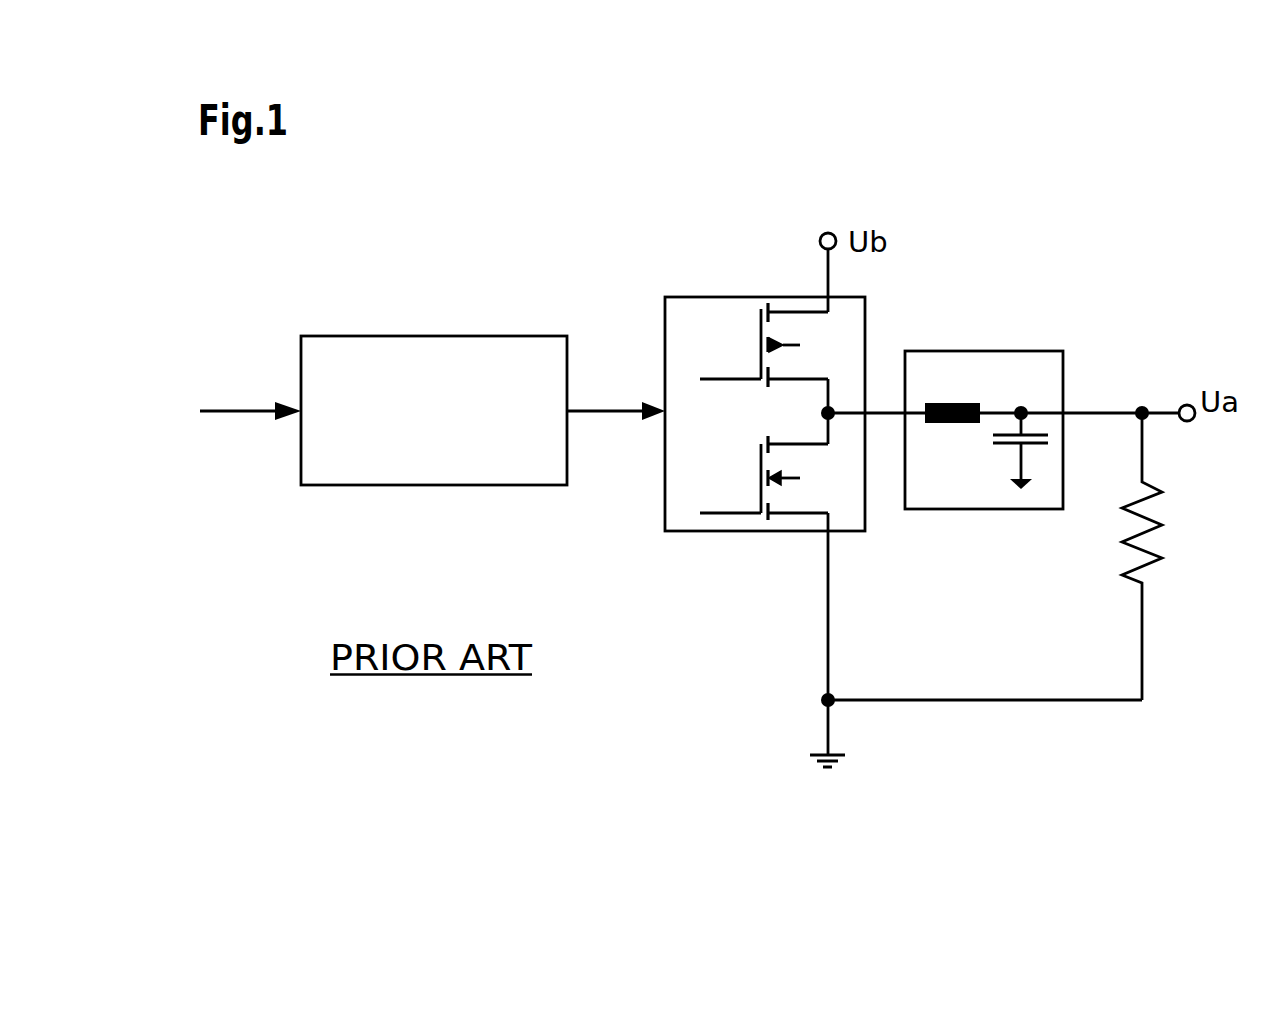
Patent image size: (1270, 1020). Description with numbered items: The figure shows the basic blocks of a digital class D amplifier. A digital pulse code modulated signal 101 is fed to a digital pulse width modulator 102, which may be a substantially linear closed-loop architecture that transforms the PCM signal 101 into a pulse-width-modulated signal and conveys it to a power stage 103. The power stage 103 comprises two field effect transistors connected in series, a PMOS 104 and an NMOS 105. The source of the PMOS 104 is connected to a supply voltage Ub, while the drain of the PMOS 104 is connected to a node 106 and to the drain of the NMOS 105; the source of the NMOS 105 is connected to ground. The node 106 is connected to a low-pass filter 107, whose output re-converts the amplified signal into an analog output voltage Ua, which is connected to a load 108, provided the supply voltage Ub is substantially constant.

The digital pulse code modulated signal 101 is at (250, 394).
The digital pulse width modulator 102 is at (448, 465).
The power stage 103 is at (693, 531).
The PMOS 104 is at (760, 358).
The NMOS 105 is at (760, 556).
The node 106 is at (847, 413).
The low-pass filter 107 is at (1008, 351).
The load 108 is at (1167, 556).